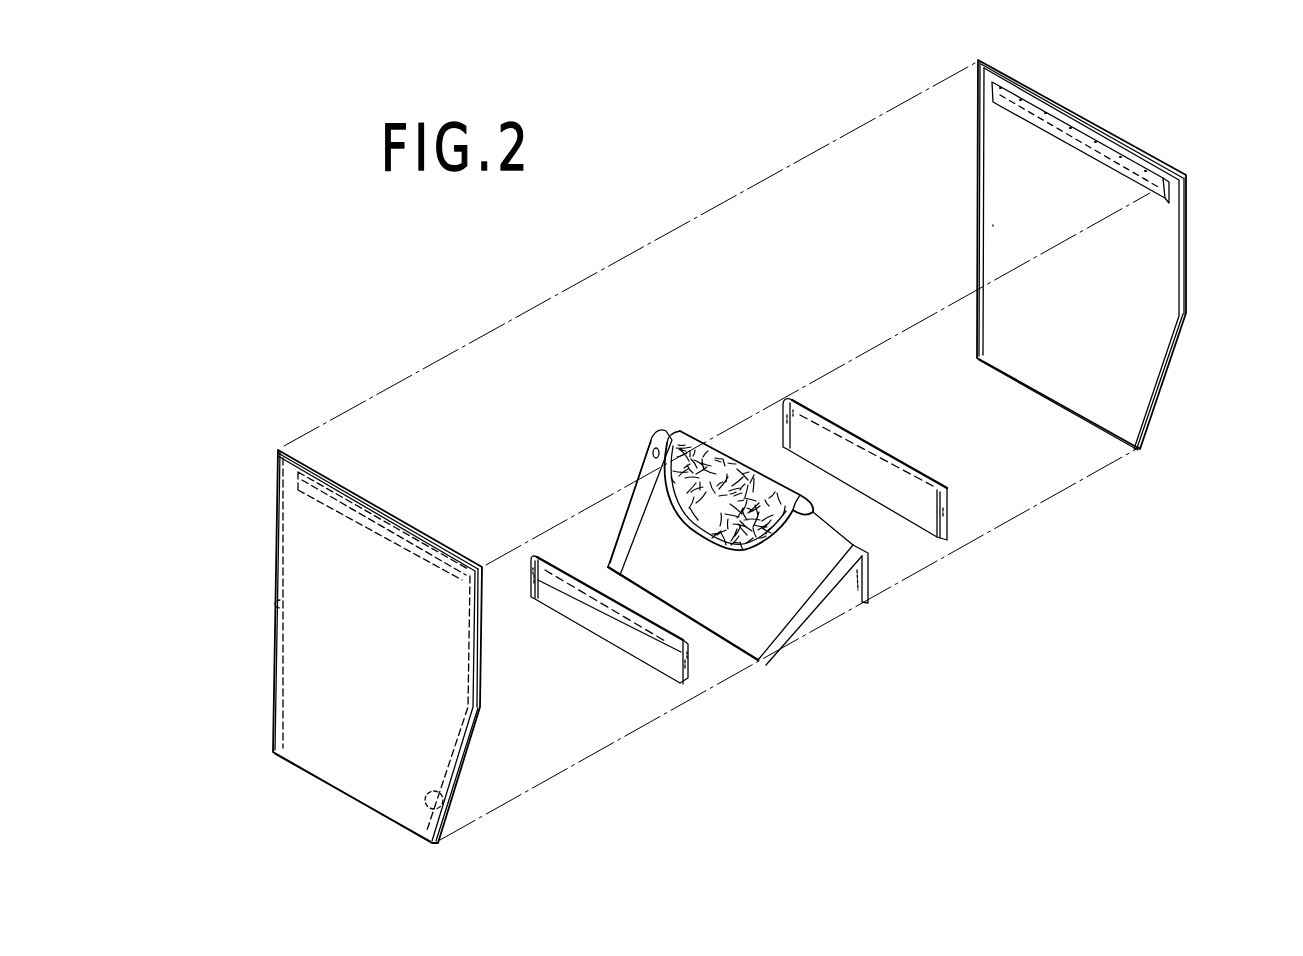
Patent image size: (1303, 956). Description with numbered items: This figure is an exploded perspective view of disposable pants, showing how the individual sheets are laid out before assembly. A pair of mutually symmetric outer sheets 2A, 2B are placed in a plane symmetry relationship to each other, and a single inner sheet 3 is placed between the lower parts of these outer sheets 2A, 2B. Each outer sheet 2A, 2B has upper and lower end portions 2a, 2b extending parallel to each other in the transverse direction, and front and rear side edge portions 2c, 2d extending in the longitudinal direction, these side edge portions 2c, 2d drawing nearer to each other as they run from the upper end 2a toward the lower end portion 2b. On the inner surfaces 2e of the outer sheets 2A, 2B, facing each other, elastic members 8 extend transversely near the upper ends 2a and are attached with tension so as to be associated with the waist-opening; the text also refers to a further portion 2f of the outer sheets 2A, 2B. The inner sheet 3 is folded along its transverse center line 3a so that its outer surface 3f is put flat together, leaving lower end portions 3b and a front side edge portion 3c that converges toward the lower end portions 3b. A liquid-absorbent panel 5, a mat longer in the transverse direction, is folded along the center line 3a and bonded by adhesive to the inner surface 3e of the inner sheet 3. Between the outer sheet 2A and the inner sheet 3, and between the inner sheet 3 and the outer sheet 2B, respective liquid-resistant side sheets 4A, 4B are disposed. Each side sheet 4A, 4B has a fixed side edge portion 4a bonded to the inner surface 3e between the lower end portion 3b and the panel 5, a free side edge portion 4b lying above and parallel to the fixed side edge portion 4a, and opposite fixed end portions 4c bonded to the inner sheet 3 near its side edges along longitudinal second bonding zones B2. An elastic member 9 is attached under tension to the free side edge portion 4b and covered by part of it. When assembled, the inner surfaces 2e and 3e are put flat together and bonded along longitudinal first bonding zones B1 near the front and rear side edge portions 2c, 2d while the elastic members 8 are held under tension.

The outer sheet 2A is at (334, 767).
The outer sheet 2B is at (1062, 397).
The upper end portion 2a is at (352, 492).
The lower end portion 2b is at (383, 808).
The front side edge portion 2c is at (472, 743).
The rear side edge portion 2d is at (291, 539).
The inner surface 2e is at (465, 627).
The outer surface 2f is at (288, 683).
The inner sheet 3 is at (742, 617).
The transverse center line 3a is at (667, 437).
The lower end portion 3b is at (617, 577).
The front side edge portion 3c is at (642, 455).
The inner surface of inner sheet 3e is at (632, 502).
The outer surface of inner sheet 3f is at (837, 590).
The side sheet 4A is at (627, 637).
The side sheet 4B is at (887, 480).
The fixed side edge portion 4a is at (577, 617).
The free side edge portion 4b is at (530, 550).
The fixed end portion 4c is at (527, 552).
The liquid-absorbent panel 5 is at (730, 463).
The elastic member 8 is at (393, 533).
The elastic member 9 is at (657, 657).
The first bonding zone B1 is at (280, 605).
The second bonding zone B2 is at (527, 547).